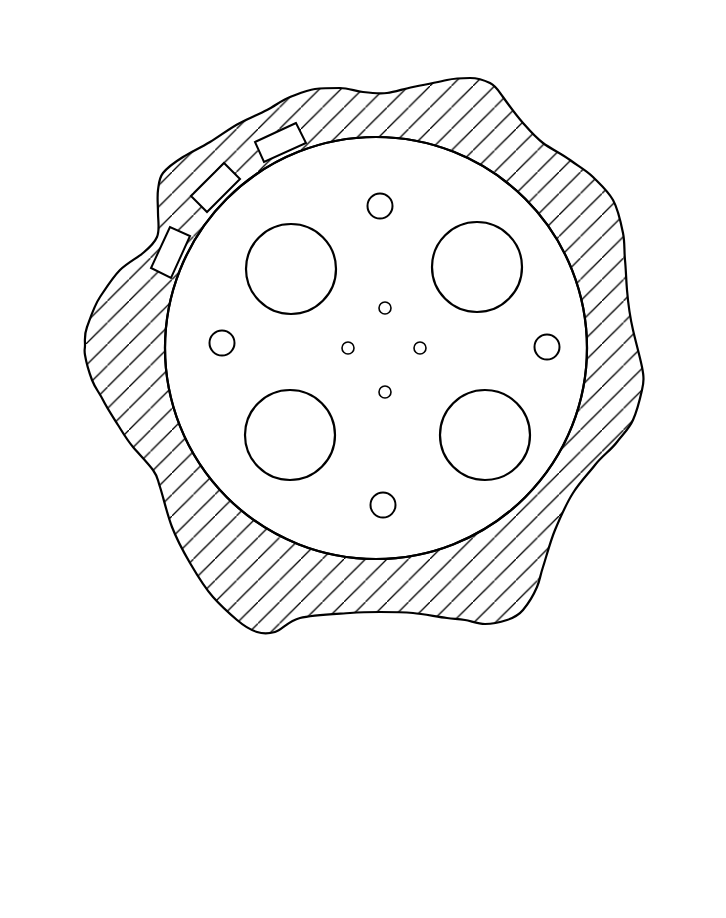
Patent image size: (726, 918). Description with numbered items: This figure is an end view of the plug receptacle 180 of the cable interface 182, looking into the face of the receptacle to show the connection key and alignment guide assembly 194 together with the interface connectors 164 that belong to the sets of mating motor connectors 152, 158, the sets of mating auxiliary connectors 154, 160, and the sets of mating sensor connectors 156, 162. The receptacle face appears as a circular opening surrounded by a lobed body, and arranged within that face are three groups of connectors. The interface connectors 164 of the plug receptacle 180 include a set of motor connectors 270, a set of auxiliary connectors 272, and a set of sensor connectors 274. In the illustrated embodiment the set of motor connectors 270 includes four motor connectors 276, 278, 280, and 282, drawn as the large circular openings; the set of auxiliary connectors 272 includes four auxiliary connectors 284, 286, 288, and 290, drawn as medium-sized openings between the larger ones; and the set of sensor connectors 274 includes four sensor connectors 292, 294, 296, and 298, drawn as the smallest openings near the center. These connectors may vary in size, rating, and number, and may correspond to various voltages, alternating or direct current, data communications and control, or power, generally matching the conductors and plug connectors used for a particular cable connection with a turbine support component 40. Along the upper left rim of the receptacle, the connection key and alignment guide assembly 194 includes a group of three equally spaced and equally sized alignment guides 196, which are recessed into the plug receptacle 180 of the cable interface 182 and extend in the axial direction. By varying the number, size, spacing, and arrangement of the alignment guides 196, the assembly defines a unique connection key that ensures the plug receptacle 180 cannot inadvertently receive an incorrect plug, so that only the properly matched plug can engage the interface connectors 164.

The turbine support component 40 is at (541, 578).
The set of mating motor connectors 152 is at (514, 484).
The set of mating auxiliary connectors 154 is at (366, 521).
The set of mating sensor connectors 156 is at (390, 410).
The set of mating motor connectors 158 is at (492, 420).
The set of mating auxiliary connectors 160 is at (374, 418).
The set of mating sensor connectors 162 is at (400, 413).
The interface connectors 164 is at (300, 508).
The plug receptacle 180 is at (372, 124).
The cable interface 182 is at (381, 64).
The connection key and alignment guide assembly 194 is at (587, 118).
The alignment guides 196 is at (279, 127).
The set of motor connectors 270 is at (245, 462).
The set of auxiliary connectors 272 is at (384, 525).
The set of sensor connectors 274 is at (376, 402).
The motor connector 276 is at (290, 390).
The motor connector 278 is at (296, 224).
The motor connector 280 is at (477, 222).
The motor connector 282 is at (486, 390).
The auxiliary connector 284 is at (382, 492).
The auxiliary connector 286 is at (222, 356).
The auxiliary connector 288 is at (380, 193).
The auxiliary connector 290 is at (540, 337).
The sensor connector 292 is at (391, 390).
The sensor connector 294 is at (342, 348).
The sensor connector 296 is at (385, 302).
The sensor connector 298 is at (426, 348).